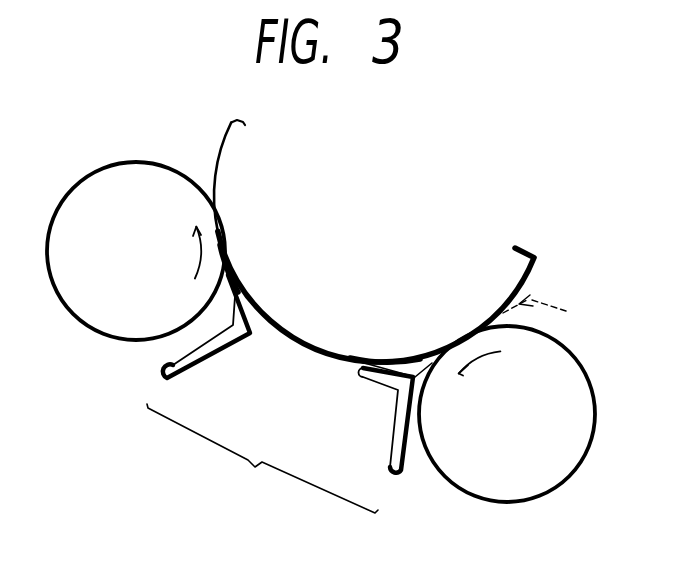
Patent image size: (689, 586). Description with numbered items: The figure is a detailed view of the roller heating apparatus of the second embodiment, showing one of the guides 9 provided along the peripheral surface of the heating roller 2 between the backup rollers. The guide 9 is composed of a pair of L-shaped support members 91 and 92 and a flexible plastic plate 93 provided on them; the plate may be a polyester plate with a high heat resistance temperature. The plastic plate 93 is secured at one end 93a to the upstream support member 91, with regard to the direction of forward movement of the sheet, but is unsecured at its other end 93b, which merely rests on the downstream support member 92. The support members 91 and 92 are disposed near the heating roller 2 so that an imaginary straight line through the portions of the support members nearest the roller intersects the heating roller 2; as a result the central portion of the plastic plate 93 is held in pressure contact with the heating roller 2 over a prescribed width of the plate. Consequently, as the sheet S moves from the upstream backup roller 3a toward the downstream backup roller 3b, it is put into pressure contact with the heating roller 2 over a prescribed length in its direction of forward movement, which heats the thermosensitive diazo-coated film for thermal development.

The heating roller 2 is at (224, 149).
The upstream backup roller 3a is at (542, 496).
The downstream backup roller 3b is at (125, 166).
The guide 9 is at (262, 458).
The upstream support member 91 is at (403, 474).
The downstream support member 92 is at (172, 362).
The flexible plastic plate 93 is at (342, 362).
The one end of the plastic plate 93a is at (388, 366).
The other end of the plastic plate 93b is at (236, 277).
The sheet S is at (544, 313).